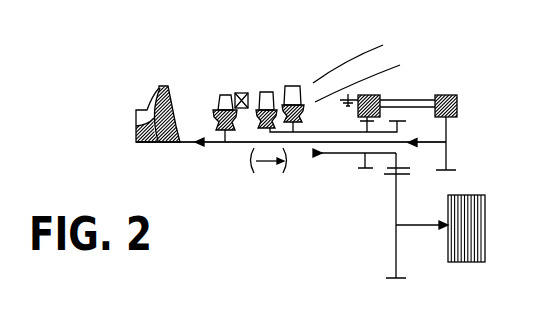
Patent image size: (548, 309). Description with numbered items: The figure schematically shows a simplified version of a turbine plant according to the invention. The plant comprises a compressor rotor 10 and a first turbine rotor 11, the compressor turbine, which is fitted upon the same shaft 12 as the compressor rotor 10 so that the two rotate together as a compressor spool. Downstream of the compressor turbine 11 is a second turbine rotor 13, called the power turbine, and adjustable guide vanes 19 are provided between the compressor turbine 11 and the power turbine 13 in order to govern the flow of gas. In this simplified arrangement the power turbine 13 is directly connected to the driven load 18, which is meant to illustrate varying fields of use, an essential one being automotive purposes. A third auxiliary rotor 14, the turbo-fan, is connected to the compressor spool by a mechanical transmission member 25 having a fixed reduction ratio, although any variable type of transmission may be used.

The compressor rotor 10 is at (150, 110).
The first turbine rotor 11 is at (218, 110).
The shaft 12 is at (208, 143).
The second turbine rotor 13 is at (262, 128).
The third auxiliary rotor 14 is at (297, 93).
The driven load 18 is at (476, 218).
The adjustable guide vanes 19 is at (245, 93).
The mechanical transmission member 25 is at (410, 107).